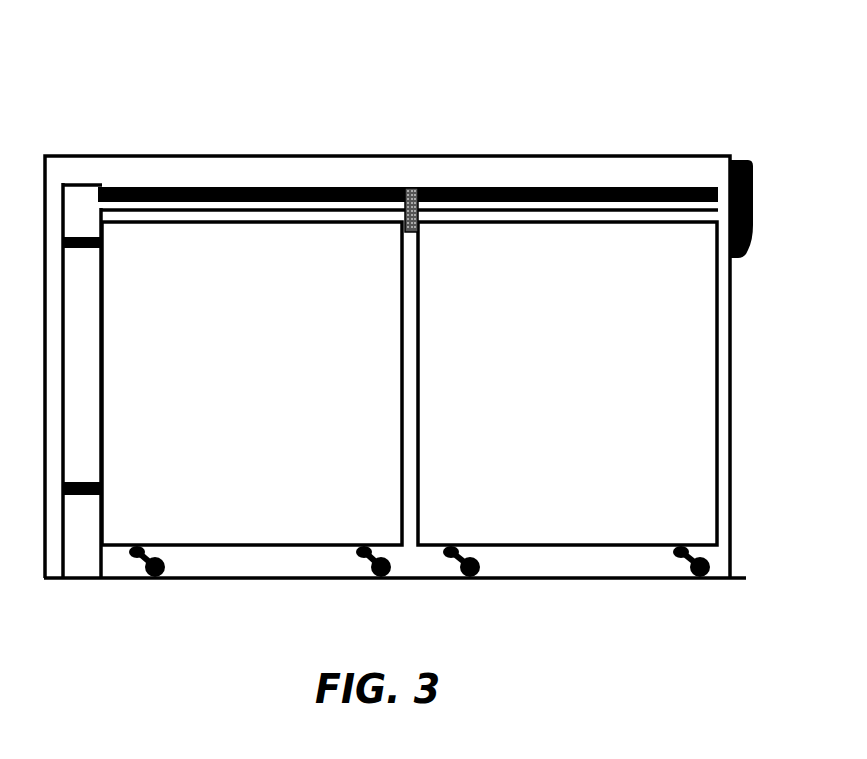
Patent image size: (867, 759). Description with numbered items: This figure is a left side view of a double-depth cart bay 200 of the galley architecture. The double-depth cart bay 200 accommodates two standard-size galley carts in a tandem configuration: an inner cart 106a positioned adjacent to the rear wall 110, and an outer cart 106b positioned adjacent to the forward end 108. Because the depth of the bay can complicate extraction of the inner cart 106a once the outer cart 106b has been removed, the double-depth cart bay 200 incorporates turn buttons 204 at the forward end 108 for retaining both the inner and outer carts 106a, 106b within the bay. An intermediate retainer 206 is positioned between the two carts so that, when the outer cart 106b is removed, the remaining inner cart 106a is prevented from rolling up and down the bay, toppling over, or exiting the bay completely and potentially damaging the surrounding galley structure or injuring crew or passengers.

The double-depth cart bay 200 is at (84, 96).
The forward end 108 is at (731, 402).
The rear wall 110 is at (65, 303).
The inner cart 106a is at (281, 283).
The outer cart 106b is at (592, 282).
The intermediate retainer 206 is at (424, 192).
The turn button 204 is at (753, 177).